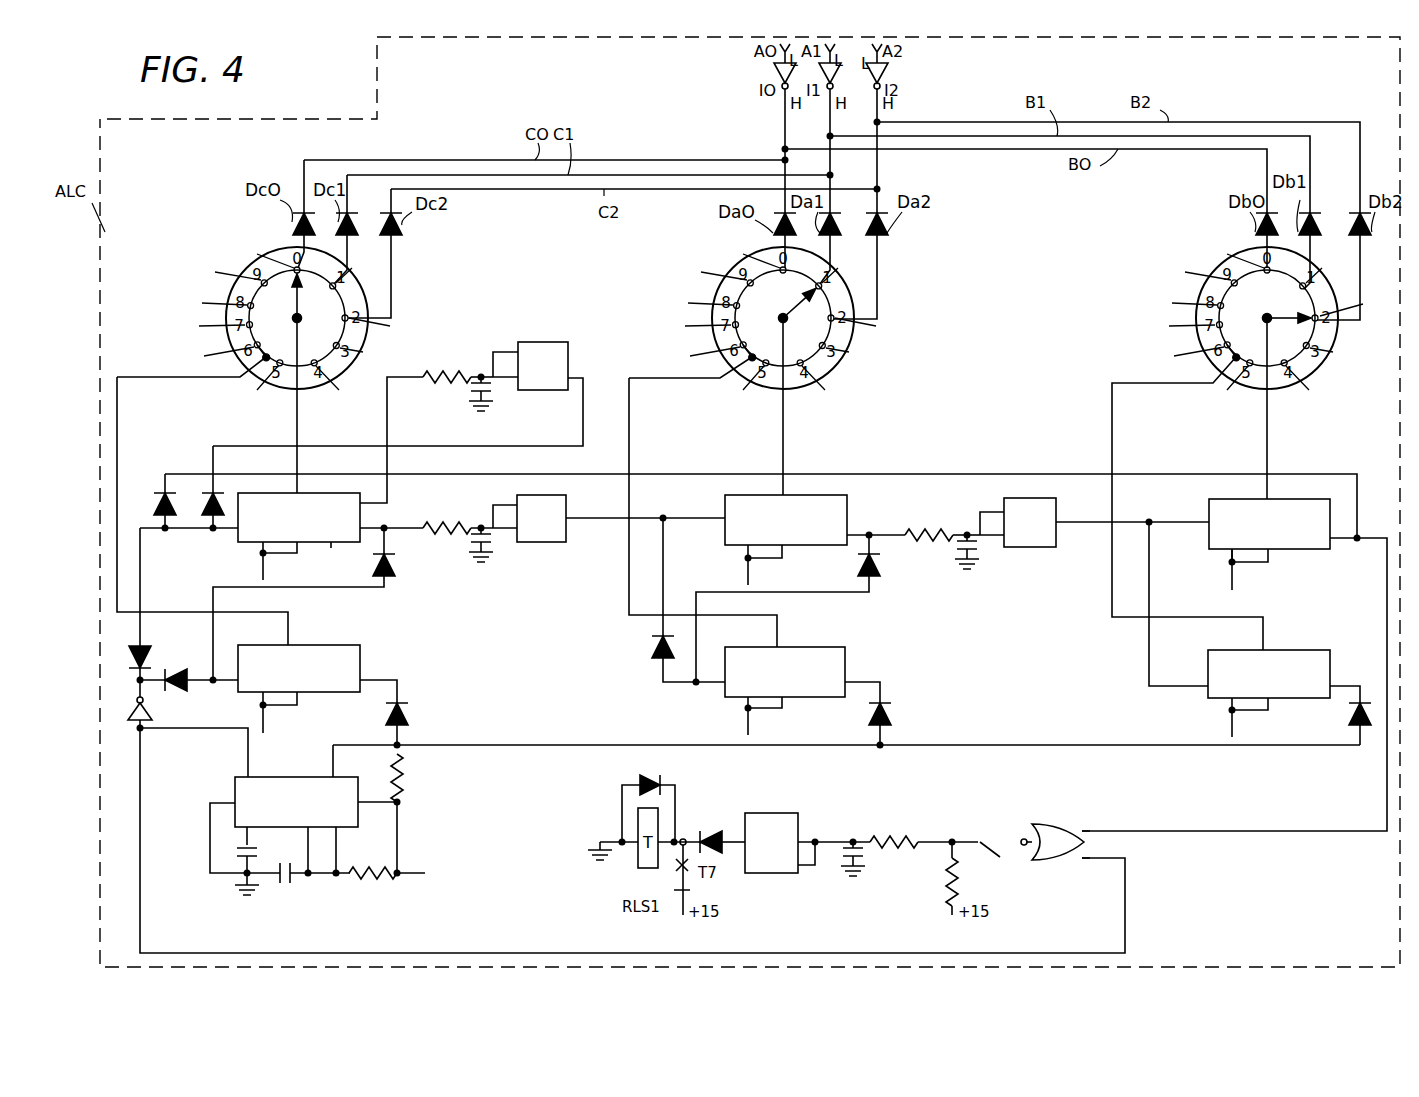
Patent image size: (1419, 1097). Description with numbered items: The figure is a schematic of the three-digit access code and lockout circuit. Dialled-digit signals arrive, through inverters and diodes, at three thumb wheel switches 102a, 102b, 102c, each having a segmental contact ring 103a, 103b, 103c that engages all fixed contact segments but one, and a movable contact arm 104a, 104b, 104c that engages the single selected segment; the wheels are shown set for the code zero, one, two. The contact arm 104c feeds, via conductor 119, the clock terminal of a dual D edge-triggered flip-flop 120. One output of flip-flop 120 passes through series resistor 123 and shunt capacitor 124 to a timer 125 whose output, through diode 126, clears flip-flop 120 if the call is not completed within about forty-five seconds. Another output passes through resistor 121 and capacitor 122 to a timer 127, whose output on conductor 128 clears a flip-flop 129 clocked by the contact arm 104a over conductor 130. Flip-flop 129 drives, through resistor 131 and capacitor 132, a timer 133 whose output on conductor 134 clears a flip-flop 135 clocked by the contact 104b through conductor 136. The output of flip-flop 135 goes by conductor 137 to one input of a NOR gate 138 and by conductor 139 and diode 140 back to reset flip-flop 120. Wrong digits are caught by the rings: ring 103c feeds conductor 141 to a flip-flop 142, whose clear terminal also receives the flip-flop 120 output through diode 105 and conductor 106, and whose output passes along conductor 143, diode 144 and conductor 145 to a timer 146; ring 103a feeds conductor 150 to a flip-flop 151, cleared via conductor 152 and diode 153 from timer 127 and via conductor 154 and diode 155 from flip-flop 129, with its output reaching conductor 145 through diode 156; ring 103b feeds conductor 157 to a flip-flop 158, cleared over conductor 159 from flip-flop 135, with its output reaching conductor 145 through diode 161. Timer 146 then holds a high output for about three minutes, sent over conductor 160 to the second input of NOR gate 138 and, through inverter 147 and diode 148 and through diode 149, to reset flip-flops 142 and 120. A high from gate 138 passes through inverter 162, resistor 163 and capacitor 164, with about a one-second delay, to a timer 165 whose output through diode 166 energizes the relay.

The thumb wheel switch 102a is at (780, 350).
The second thumb wheel switch 102b is at (1271, 338).
The third thumb wheel switch 102c is at (294, 348).
The segmental contact ring 103a is at (780, 327).
The ring contact 103b is at (1267, 327).
The ring contact 103c is at (294, 327).
The movable contact arm 104a is at (784, 296).
The movable contact 104b is at (1279, 295).
The rotatable contact arm 104c is at (314, 300).
The diode 105 is at (393, 572).
The conductor 106 is at (243, 585).
The conductor 119 is at (297, 430).
The dual D edge-triggered flip-flop 120 is at (308, 537).
The series resistor 121 is at (440, 525).
The shunt capacitor 122 is at (490, 575).
The series resistor 123 is at (447, 360).
The shunt capacitor 124 is at (470, 398).
The timer 125 is at (540, 342).
The diode 126 is at (212, 480).
The timer 127 is at (548, 545).
The conductor 128 is at (640, 518).
The flip-flop 129 is at (735, 555).
The conductor 130 is at (783, 447).
The series resistor 131 is at (922, 532).
The shunt capacitor 132 is at (978, 580).
The timer 133 is at (1028, 548).
The conductor 134 is at (1125, 522).
The flip-flop 135 is at (1210, 552).
The conductor 136 is at (1267, 440).
The conductor 137 is at (1387, 592).
The NOR gate 138 is at (1058, 826).
The conductor 139 is at (1290, 478).
The diode 140 is at (162, 490).
The conductor 141 is at (117, 420).
The flip-flop 142 is at (325, 645).
The conductor 143 is at (400, 690).
The diode 144 is at (410, 716).
The conductor 145 is at (368, 745).
The timer 146 is at (235, 798).
The signal inverter 147 is at (155, 712).
The diode 148 is at (176, 674).
The diode 149 is at (128, 655).
The conductor 150 is at (629, 427).
The flip-flop 151 is at (830, 647).
The conductor 152 is at (655, 682).
The diode 153 is at (655, 650).
The conductor 154 is at (790, 592).
The diode 155 is at (880, 577).
The diode 156 is at (892, 712).
The conductor 157 is at (1112, 425).
The flip-flop 158 is at (1290, 650).
The conductor 159 is at (1148, 662).
The conductor 160 is at (245, 763).
The diode 161 is at (1348, 718).
The inverter 162 is at (992, 815).
The series resistor 163 is at (892, 830).
The shunt capacitor 164 is at (868, 880).
The timer 165 is at (782, 802).
The diode 166 is at (710, 828).